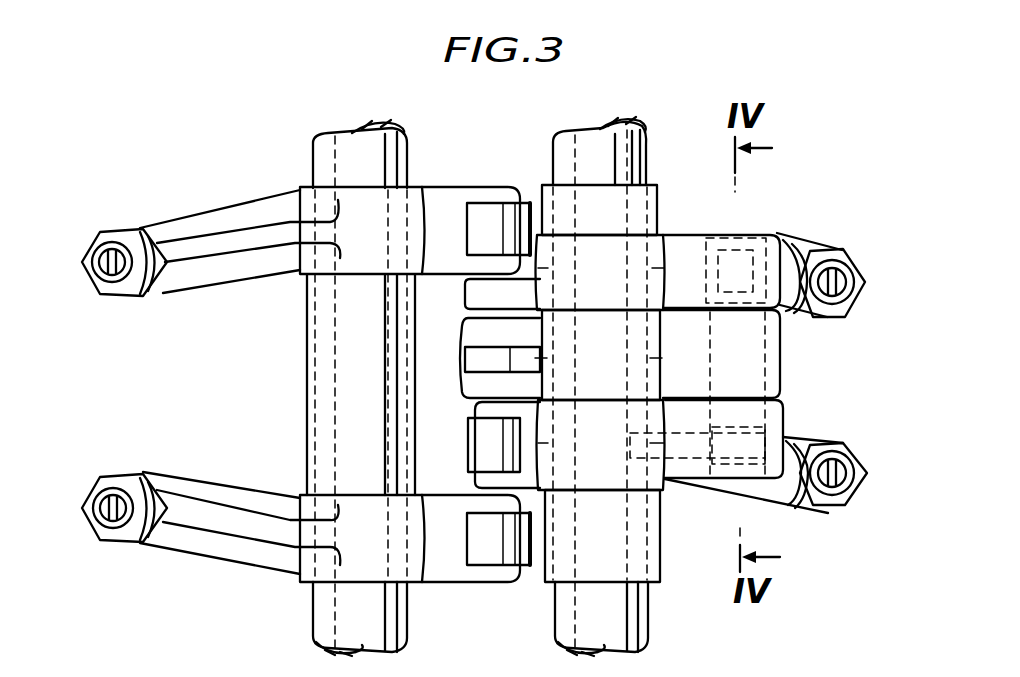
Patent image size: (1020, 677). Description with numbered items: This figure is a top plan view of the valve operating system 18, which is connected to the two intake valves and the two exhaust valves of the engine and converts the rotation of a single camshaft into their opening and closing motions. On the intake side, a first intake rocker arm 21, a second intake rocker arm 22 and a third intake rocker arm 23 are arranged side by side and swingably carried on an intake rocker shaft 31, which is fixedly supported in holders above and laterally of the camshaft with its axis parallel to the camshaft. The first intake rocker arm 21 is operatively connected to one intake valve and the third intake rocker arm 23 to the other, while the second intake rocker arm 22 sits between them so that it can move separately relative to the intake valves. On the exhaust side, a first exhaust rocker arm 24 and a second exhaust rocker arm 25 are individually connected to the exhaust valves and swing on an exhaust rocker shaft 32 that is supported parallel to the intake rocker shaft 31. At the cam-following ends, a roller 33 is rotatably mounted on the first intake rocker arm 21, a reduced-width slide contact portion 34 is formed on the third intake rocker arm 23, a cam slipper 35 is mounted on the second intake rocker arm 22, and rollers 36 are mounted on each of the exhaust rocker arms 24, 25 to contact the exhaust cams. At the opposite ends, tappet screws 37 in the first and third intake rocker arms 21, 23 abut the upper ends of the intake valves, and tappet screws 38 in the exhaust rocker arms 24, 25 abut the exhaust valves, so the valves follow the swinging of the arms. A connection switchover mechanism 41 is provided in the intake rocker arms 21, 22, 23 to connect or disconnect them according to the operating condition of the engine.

The valve operating system 18 is at (674, 155).
The first intake rocker arm 21 is at (707, 480).
The second intake rocker arm 22 is at (772, 357).
The third intake rocker arm 23 is at (690, 240).
The first exhaust rocker arm 24 is at (213, 550).
The second exhaust rocker arm 25 is at (230, 218).
The intake rocker shaft 31 is at (643, 618).
The exhaust rocker shaft 32 is at (325, 622).
The roller 33 is at (478, 444).
The slide contact portion 34 is at (475, 294).
The cam slipper 35 is at (475, 383).
The rollers 36 is at (477, 208).
The tappet screws 37 is at (852, 296).
The tappet screws 38 is at (98, 272).
The connection switchover mechanism 41 is at (780, 384).